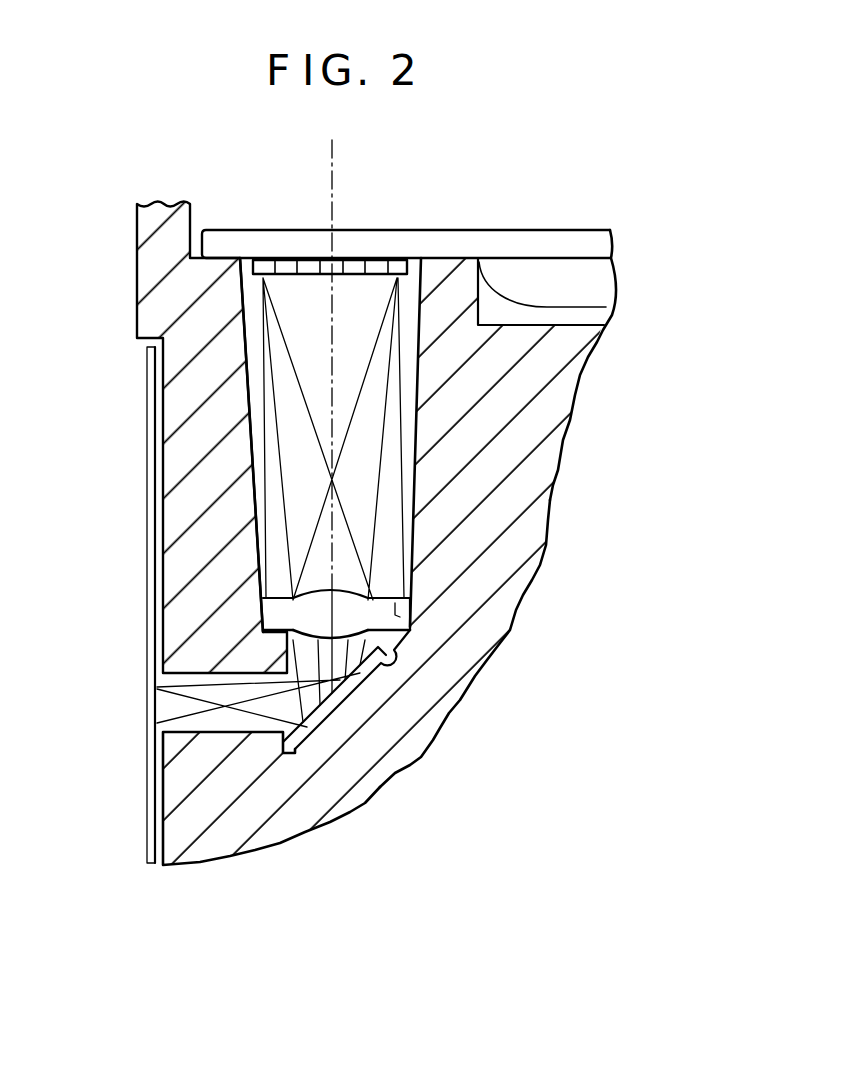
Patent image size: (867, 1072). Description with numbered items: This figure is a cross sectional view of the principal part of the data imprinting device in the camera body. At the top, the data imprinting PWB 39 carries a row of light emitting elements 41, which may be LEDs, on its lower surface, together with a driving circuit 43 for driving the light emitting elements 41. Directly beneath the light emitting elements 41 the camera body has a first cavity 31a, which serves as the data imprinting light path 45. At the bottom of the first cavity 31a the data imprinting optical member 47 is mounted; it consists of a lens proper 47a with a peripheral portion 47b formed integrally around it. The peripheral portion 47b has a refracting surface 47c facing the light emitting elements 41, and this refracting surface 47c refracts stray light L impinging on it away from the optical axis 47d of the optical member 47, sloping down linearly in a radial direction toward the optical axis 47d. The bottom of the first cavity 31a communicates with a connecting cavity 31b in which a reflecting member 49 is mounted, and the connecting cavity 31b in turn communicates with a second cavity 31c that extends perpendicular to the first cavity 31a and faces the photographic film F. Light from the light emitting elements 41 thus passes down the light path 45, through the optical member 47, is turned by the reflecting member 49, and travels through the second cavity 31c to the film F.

The data imprinting PWB 39 is at (547, 240).
The light emitting elements 41 is at (263, 262).
The driving circuit 43 is at (600, 290).
The first cavity 31a is at (415, 330).
The data imprinting light path 45 is at (418, 378).
The stray light L is at (407, 550).
The data imprinting optical member 47 is at (420, 598).
The lens proper 47a is at (317, 580).
The peripheral portion 47b is at (407, 627).
The refracting surface 47c is at (277, 590).
The optical axis 47d is at (322, 378).
The connecting cavity 31b is at (462, 698).
The reflecting member 49 is at (400, 754).
The second cavity 31c is at (232, 727).
The photographic film F is at (147, 545).